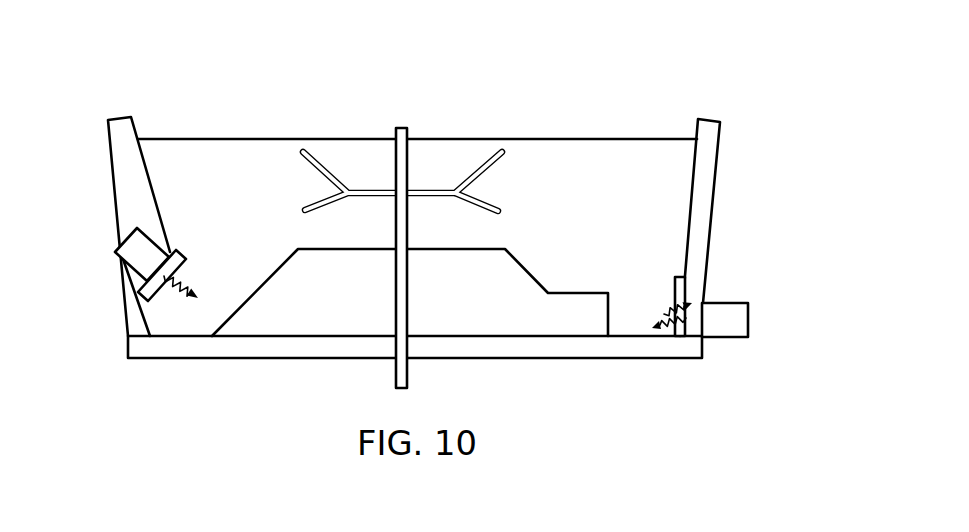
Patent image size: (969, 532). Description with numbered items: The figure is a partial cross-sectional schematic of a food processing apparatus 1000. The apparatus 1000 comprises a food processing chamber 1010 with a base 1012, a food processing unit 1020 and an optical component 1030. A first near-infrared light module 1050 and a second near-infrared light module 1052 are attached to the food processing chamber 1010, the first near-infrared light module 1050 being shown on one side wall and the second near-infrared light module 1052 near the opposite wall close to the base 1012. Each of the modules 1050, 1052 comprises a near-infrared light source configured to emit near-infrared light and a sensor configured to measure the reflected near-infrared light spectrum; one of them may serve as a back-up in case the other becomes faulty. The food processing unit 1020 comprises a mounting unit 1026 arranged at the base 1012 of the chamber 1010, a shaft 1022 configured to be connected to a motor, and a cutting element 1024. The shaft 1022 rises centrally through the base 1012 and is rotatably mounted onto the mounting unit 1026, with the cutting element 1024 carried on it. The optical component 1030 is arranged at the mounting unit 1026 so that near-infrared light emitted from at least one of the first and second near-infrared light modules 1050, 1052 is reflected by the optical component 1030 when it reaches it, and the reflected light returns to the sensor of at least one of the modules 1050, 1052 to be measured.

The food processing apparatus 1000 is at (718, 48).
The food processing chamber 1010 is at (703, 215).
The base 1012 is at (272, 347).
The food processing unit 1020 is at (446, 165).
The shaft 1022 is at (401, 159).
The cutting element 1024 is at (502, 208).
The mounting unit 1026 is at (355, 317).
The optical component 1030 is at (452, 315).
The first near-infrared light module 1050 is at (137, 258).
The second near-infrared light module 1052 is at (738, 317).